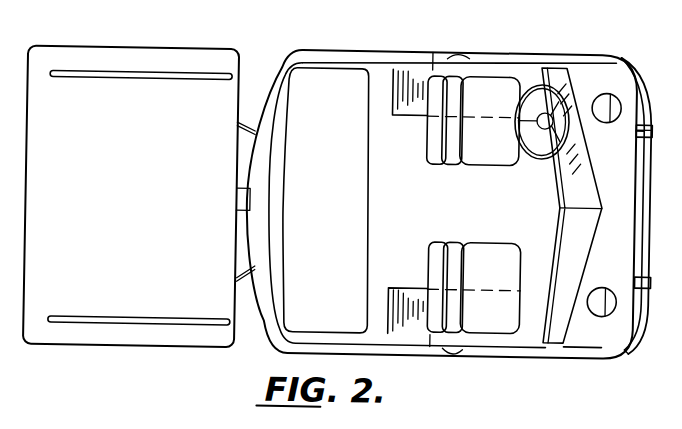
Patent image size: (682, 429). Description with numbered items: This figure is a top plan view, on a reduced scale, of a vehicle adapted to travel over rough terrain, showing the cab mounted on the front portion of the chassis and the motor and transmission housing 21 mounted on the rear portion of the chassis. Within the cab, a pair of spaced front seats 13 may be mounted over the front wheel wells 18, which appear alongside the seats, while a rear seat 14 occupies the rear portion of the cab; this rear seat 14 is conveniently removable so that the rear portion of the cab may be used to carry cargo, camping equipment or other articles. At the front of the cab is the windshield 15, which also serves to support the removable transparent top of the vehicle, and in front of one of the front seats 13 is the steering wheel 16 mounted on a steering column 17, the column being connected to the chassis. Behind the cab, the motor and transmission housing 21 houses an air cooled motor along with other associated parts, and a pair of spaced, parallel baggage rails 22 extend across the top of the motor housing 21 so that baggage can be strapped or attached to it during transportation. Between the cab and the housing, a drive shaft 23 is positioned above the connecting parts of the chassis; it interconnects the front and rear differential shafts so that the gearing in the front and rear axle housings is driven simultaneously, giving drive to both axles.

The front seats 13 is at (480, 152).
The rear seat 14 is at (359, 248).
The windshield 15 is at (554, 342).
The steering wheel 16 is at (529, 152).
The steering column 17 is at (551, 120).
The front wheel wells 18 is at (402, 114).
The motor and transmission housing 21 is at (115, 50).
The baggage rails 22 is at (146, 84).
The drive shaft 23 is at (243, 200).